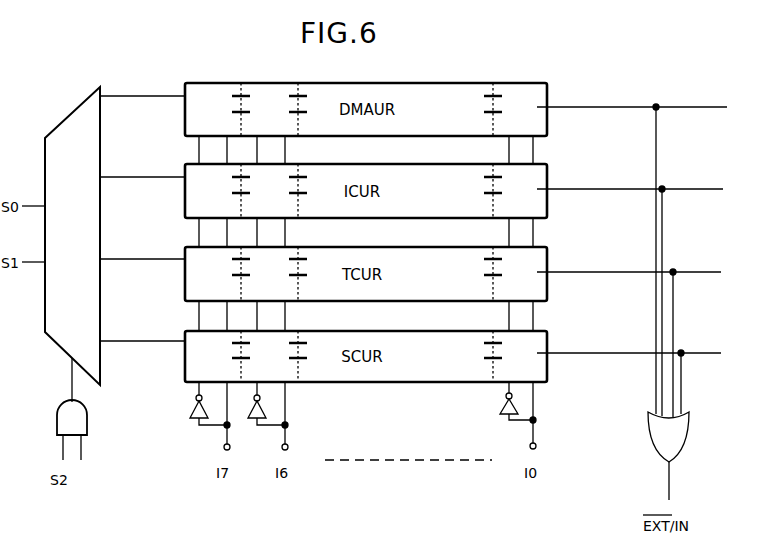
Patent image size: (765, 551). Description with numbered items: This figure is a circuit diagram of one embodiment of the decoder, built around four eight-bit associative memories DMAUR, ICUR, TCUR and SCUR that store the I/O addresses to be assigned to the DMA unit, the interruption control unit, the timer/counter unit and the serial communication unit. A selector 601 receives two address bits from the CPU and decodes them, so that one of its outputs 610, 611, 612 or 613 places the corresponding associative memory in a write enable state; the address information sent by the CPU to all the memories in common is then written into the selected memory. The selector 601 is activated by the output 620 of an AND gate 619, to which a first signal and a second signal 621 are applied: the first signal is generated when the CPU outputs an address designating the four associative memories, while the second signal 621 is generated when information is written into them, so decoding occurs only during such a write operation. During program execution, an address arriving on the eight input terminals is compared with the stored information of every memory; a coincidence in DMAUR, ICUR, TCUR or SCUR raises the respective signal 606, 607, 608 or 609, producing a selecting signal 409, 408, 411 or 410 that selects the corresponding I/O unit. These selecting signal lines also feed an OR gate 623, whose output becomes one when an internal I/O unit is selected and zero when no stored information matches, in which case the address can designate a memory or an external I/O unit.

The selector 601 is at (83, 100).
The output of selector 610 is at (153, 94).
The output of selector 611 is at (155, 176).
The output of selector 612 is at (159, 258).
The output of selector 613 is at (163, 340).
The signal 606 is at (612, 105).
The signal 607 is at (609, 188).
The signal 608 is at (614, 270).
The signal 609 is at (613, 351).
The selecting signal 409 is at (686, 104).
The selecting signal 408 is at (687, 187).
The selecting signal 411 is at (690, 270).
The selecting signal 410 is at (693, 351).
The output of AND gate 620 is at (69, 384).
The AND gate 619 is at (57, 429).
The signal 621 is at (83, 447).
The OR gate 623 is at (683, 452).